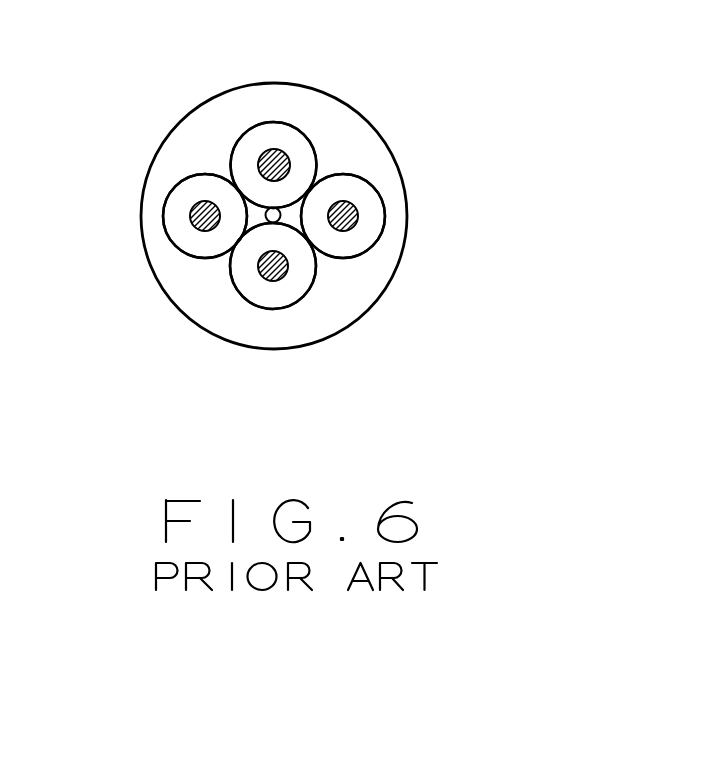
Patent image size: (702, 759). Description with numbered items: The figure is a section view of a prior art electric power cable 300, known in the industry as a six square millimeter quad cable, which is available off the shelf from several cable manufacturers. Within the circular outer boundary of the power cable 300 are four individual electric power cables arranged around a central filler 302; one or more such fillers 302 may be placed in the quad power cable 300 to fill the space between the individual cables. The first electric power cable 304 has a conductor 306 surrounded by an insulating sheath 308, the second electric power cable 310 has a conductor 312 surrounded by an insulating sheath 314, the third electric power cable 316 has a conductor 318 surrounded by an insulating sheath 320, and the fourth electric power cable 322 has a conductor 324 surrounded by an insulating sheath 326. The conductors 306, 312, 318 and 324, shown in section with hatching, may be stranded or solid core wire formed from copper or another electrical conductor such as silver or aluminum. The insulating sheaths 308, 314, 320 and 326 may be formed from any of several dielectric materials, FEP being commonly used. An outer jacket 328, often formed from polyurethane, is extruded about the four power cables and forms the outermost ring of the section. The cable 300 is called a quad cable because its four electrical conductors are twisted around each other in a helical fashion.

The electric power cable 300 is at (435, 98).
The filler 302 is at (277, 221).
The first electric power cable 304 is at (273, 122).
The conductor 306 is at (285, 157).
The insulating sheath 308 is at (250, 152).
The second electric power cable 310 is at (385, 218).
The conductor 312 is at (350, 225).
The insulating sheath 314 is at (365, 195).
The third electric power cable 316 is at (275, 309).
The conductor 318 is at (260, 270).
The insulating sheath 320 is at (285, 290).
The fourth electric power cable 322 is at (163, 228).
The conductor 324 is at (193, 203).
The insulating sheath 326 is at (195, 240).
The outer jacket 328 is at (198, 138).